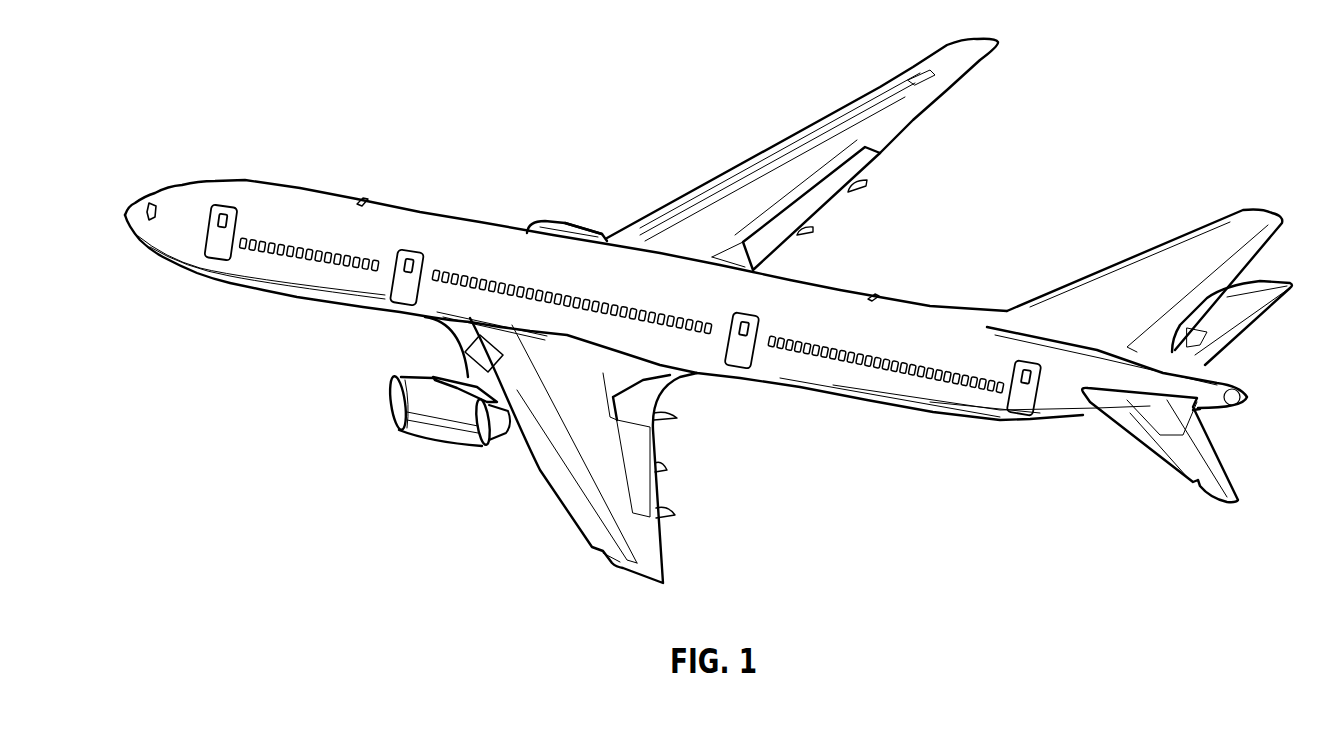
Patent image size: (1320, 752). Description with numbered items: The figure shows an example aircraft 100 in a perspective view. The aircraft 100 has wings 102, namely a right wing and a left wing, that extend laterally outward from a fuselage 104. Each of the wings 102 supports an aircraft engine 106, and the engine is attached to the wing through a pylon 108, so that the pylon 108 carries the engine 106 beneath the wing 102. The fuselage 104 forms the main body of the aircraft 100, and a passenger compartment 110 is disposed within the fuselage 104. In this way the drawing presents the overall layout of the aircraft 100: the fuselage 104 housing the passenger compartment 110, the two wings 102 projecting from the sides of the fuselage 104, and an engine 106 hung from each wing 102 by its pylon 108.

The aircraft 100 is at (1174, 66).
The wings 102 is at (818, 128).
The fuselage 104 is at (715, 362).
The aircraft engine 106 is at (547, 227).
The pylon 108 is at (598, 231).
The passenger compartment 110 is at (888, 226).